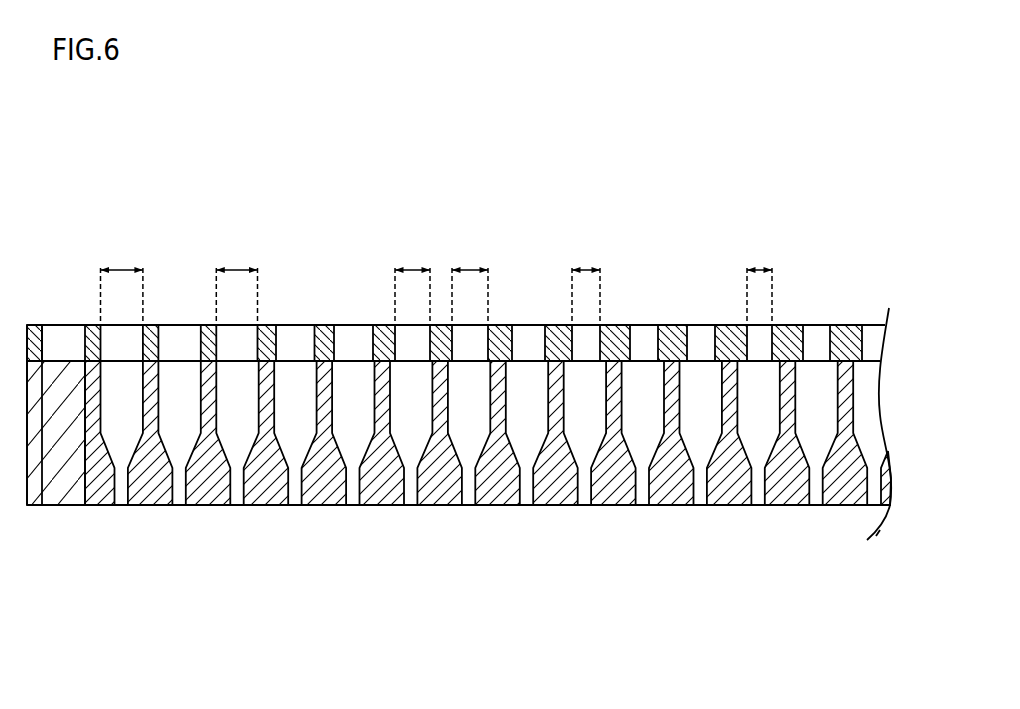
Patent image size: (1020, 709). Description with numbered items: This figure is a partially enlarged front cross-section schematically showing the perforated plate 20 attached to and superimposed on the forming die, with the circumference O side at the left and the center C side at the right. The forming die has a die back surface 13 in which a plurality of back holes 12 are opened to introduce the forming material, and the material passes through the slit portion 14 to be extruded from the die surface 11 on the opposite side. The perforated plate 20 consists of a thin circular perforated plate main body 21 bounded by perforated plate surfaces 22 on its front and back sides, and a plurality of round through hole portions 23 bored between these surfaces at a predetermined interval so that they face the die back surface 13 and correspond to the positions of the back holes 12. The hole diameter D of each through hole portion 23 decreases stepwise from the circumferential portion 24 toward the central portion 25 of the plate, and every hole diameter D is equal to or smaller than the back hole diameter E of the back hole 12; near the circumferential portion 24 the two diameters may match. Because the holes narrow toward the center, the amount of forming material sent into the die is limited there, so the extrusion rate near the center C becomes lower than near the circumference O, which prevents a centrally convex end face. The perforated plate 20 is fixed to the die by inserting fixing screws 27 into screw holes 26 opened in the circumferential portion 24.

The die surface 11 is at (697, 506).
The back hole 12 is at (547, 392).
The die back surface 13 is at (652, 362).
The slit portion 14 is at (415, 506).
The perforated plate 20 is at (498, 183).
The perforated plate main body 21 is at (328, 338).
The perforated plate surface 22 is at (210, 324).
The through hole portion 23 is at (708, 361).
The circumferential portion 24 is at (184, 201).
The central portion 25 is at (838, 307).
The screw hole 26 is at (34, 326).
The fixing screw 27 is at (67, 490).
The hole diameter D is at (128, 268).
The back hole diameter E is at (470, 268).
The circumference O is at (77, 543).
The center C is at (827, 573).